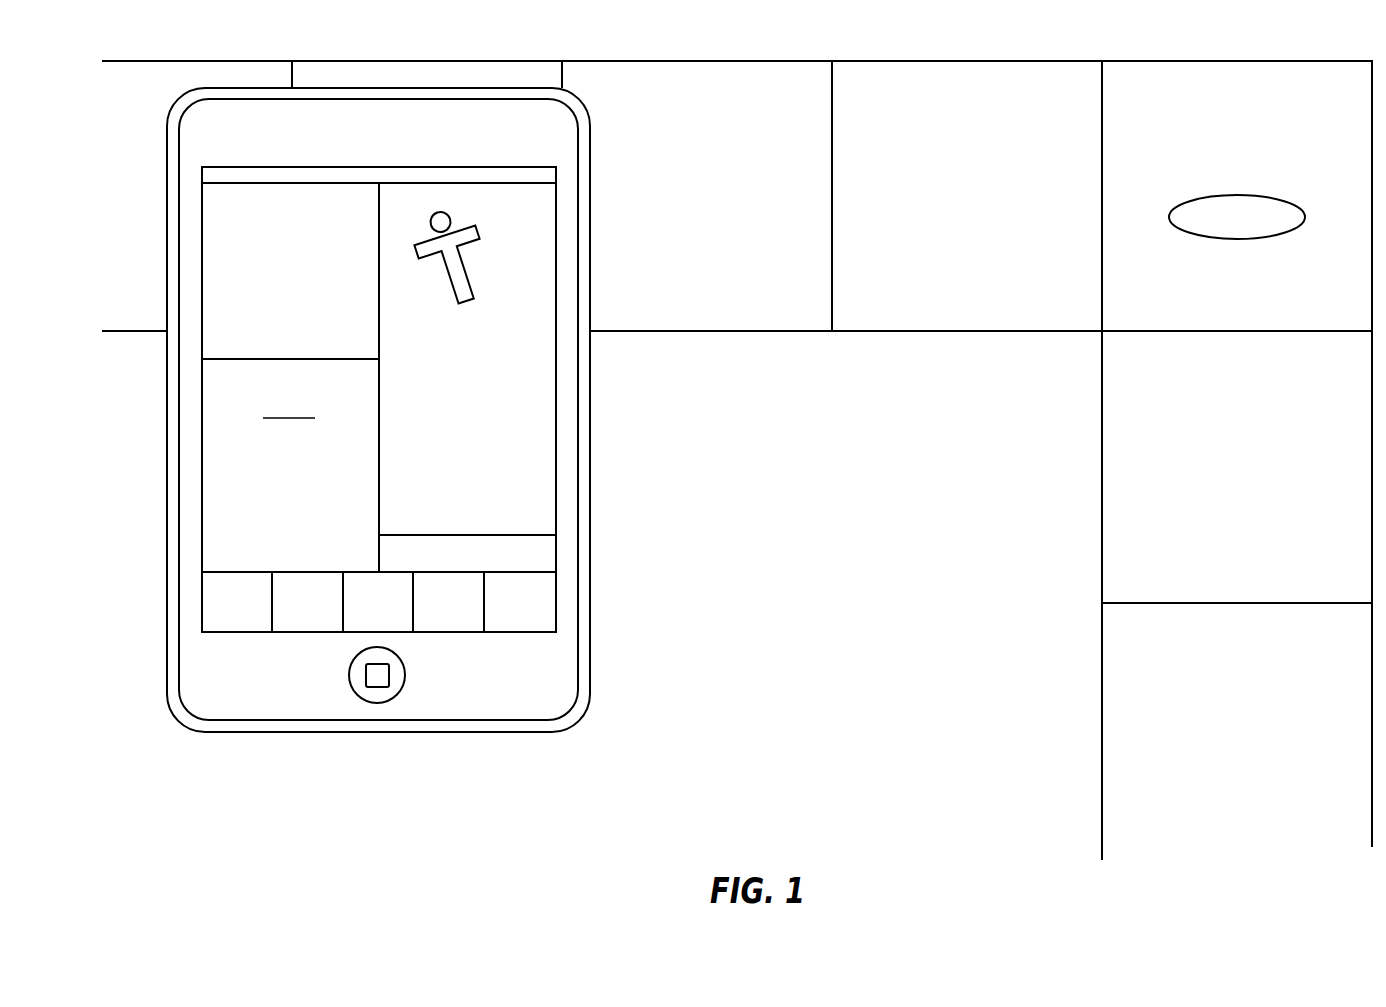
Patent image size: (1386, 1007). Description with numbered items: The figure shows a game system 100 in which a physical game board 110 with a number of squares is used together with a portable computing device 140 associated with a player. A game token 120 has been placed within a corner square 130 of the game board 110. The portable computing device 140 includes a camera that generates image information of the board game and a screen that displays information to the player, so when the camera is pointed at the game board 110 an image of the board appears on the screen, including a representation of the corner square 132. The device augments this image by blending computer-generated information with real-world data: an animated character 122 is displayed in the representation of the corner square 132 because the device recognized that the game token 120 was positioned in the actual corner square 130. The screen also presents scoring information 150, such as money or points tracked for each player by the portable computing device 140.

The game system 100 is at (802, 553).
The game board 110 is at (743, 333).
The game token 120 is at (1237, 238).
The animated character 122 is at (467, 305).
The corner square 130 is at (1328, 125).
The representation of the corner square 132 is at (529, 233).
The portable computing device 140 is at (480, 732).
The scoring information 150 is at (297, 502).